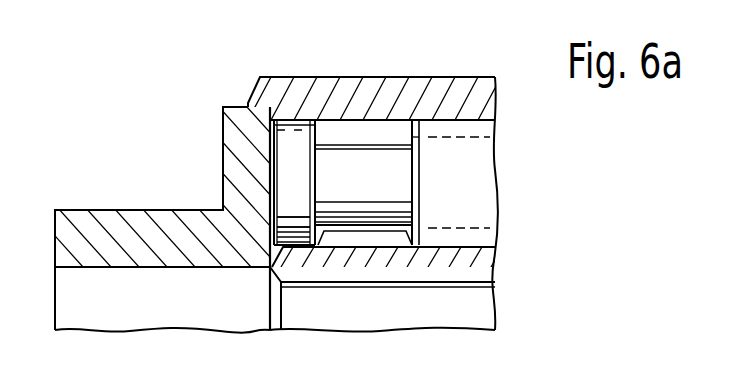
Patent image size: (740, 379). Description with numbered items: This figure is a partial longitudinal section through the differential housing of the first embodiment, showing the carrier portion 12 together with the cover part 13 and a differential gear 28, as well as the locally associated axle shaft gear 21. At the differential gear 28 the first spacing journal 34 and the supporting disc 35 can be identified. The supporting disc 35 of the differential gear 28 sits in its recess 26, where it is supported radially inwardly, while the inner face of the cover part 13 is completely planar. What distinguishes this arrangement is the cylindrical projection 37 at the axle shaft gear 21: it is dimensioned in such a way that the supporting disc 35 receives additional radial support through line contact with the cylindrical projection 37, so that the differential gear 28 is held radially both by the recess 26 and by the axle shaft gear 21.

The carrier portion 12 is at (333, 97).
The cover part 13 is at (120, 222).
The axle shaft gear 21 is at (480, 257).
The recess 26 is at (470, 122).
The differential gear 28 is at (448, 130).
The first spacing journal 34 is at (377, 156).
The supporting disc 35 is at (295, 138).
The cylindrical projection 37 is at (295, 227).